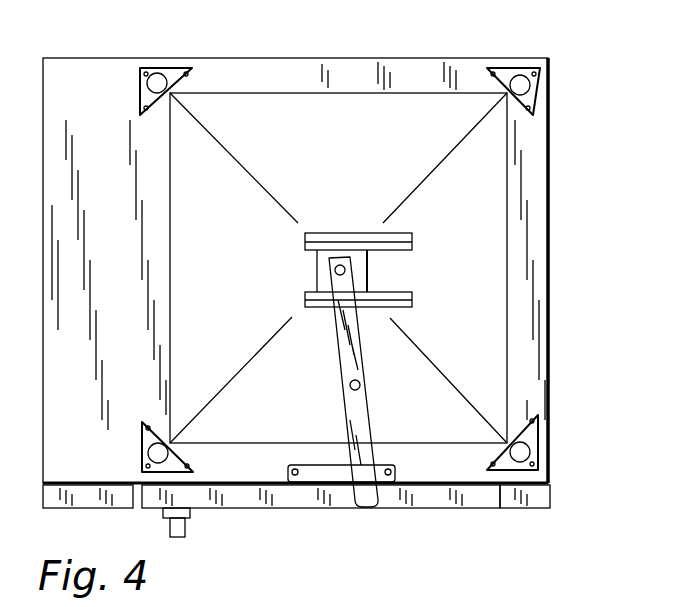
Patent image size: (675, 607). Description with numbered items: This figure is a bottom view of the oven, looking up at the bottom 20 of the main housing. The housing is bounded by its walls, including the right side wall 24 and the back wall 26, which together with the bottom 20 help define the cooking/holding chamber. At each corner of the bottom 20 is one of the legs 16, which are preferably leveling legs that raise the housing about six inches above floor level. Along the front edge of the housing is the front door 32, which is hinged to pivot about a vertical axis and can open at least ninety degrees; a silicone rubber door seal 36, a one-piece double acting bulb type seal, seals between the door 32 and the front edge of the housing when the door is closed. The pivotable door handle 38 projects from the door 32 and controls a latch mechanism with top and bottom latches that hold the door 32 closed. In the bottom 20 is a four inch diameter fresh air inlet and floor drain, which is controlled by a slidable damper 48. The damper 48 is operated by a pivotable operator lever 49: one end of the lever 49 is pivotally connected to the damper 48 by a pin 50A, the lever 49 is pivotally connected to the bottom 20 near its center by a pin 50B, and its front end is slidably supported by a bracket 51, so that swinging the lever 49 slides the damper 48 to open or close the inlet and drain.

The legs 16 is at (155, 72).
The bottom 20 is at (493, 178).
The right side wall 24 is at (551, 300).
The back wall 26 is at (262, 58).
The front door 32 is at (283, 497).
The door seal 36 is at (500, 485).
The door handle 38 is at (190, 525).
The slidable damper 48 is at (360, 263).
The operator lever 49 is at (360, 410).
The pin 50A is at (335, 270).
The pin 50B is at (350, 385).
The bracket 51 is at (389, 478).